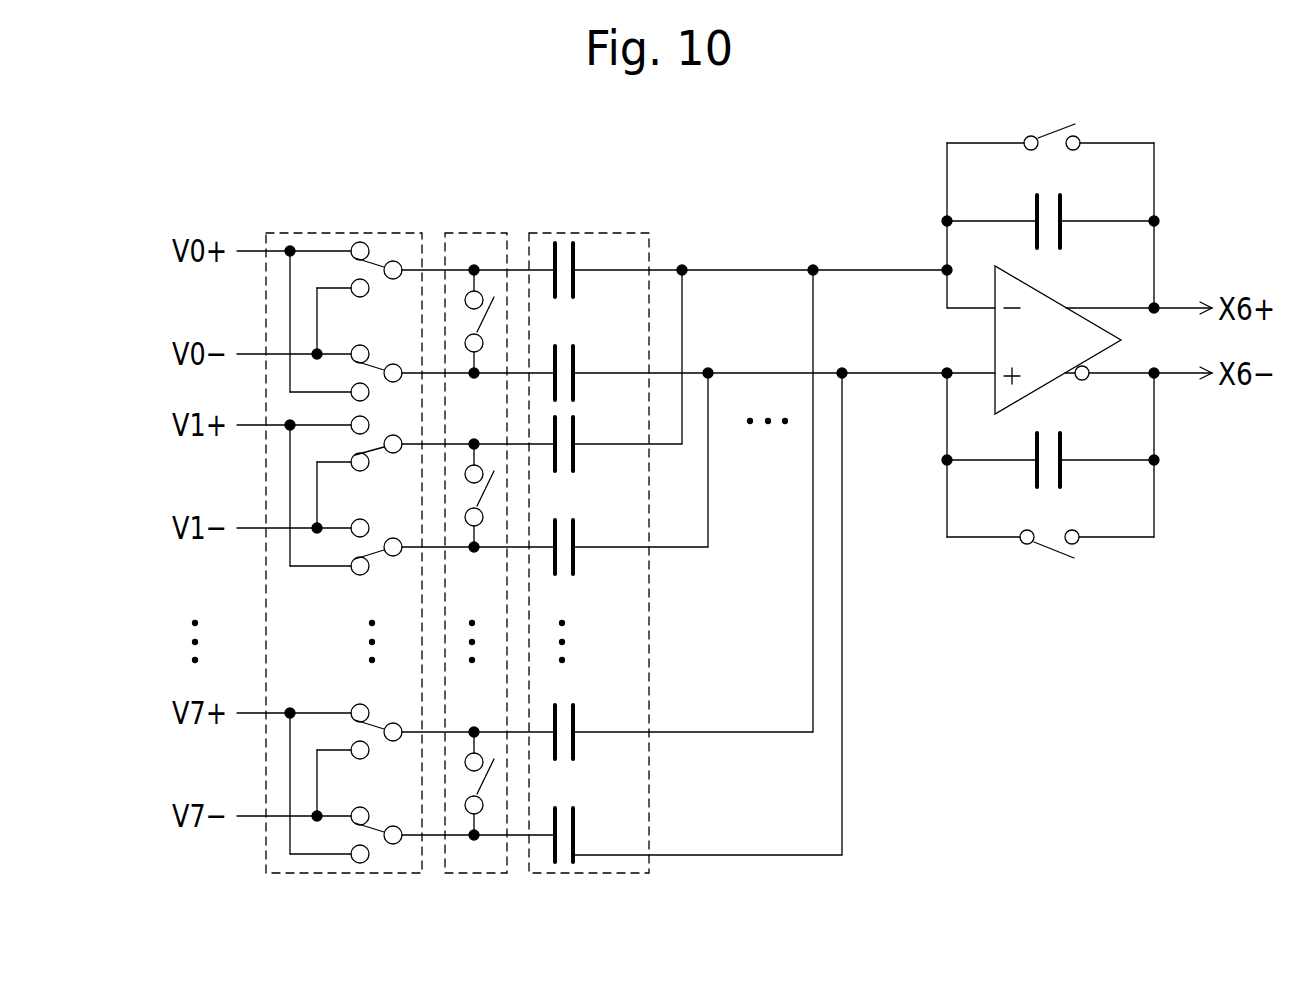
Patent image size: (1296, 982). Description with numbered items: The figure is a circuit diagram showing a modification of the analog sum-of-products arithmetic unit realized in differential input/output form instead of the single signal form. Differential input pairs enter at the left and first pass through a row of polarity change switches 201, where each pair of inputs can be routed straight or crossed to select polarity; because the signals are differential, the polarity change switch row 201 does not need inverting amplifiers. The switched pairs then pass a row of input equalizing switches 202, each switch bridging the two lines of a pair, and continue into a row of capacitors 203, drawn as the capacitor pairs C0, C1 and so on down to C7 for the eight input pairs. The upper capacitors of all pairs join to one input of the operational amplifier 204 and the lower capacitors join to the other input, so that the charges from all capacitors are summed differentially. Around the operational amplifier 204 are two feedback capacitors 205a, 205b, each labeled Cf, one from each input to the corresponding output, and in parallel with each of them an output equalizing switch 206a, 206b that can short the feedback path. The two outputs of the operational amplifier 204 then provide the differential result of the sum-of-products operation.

The polarity change switch row 201 is at (292, 876).
The input equalizing switch row 202 is at (460, 876).
The capacitor row 203 is at (577, 585).
The operational amplifier 204 is at (995, 342).
The feedback capacitor 205a is at (1050, 224).
The feedback capacitor 205b is at (1095, 437).
The output equalizing switch 206a is at (1050, 136).
The output equalizing switch 206b is at (1050, 548).
The sampling capacitor C0 is at (576, 281).
The sampling capacitor C1 is at (576, 455).
The sampling capacitor C7 is at (576, 742).
The feedback capacitor Cf is at (1048, 272).